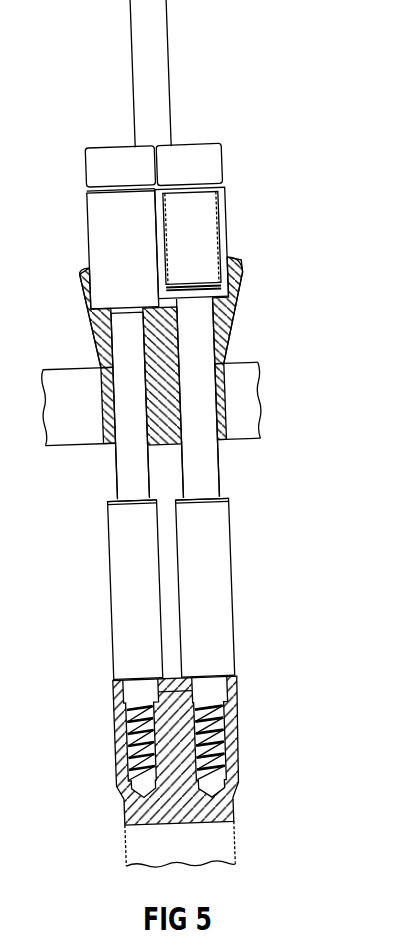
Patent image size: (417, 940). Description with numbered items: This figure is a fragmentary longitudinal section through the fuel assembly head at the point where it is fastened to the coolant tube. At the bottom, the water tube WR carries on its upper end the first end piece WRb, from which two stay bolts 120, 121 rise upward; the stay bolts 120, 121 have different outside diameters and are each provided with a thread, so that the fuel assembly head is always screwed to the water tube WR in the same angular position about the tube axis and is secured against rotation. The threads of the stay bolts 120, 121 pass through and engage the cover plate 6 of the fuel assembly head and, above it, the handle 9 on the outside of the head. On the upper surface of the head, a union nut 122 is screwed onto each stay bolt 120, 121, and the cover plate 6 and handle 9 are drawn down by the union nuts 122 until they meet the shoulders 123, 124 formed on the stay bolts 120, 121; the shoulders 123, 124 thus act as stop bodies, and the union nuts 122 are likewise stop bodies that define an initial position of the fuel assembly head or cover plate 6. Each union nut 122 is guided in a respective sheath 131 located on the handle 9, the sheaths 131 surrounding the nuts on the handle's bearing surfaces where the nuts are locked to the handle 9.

The handle 9 is at (171, 41).
The union nut 122 is at (97, 172).
The sheath 131 is at (100, 229).
The cover plate 6 is at (230, 362).
The shoulder 123 is at (110, 497).
The shoulder 124 is at (226, 495).
The stay bolt 120 is at (125, 580).
The stay bolt 121 is at (222, 587).
The first end piece WRb is at (237, 791).
The water tube WR is at (237, 838).